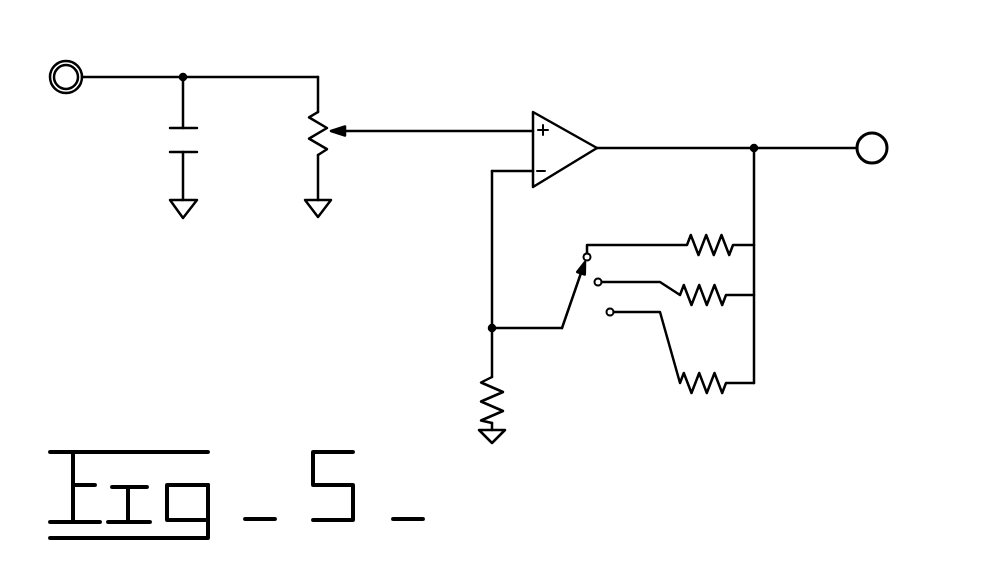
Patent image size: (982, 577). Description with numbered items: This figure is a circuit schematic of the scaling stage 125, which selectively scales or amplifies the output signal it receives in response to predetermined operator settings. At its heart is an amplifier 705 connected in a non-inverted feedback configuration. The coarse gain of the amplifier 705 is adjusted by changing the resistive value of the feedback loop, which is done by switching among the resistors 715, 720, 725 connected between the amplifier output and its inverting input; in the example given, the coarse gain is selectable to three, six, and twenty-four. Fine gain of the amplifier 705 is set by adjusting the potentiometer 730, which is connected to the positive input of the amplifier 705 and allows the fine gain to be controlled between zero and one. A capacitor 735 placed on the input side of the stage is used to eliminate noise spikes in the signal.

The scaling stage 125 is at (468, 252).
The amplifier 705 is at (559, 123).
The resistor 715 is at (722, 236).
The resistor 720 is at (722, 286).
The resistor 725 is at (722, 374).
The potentiometer 730 is at (322, 148).
The capacitor 735 is at (183, 152).